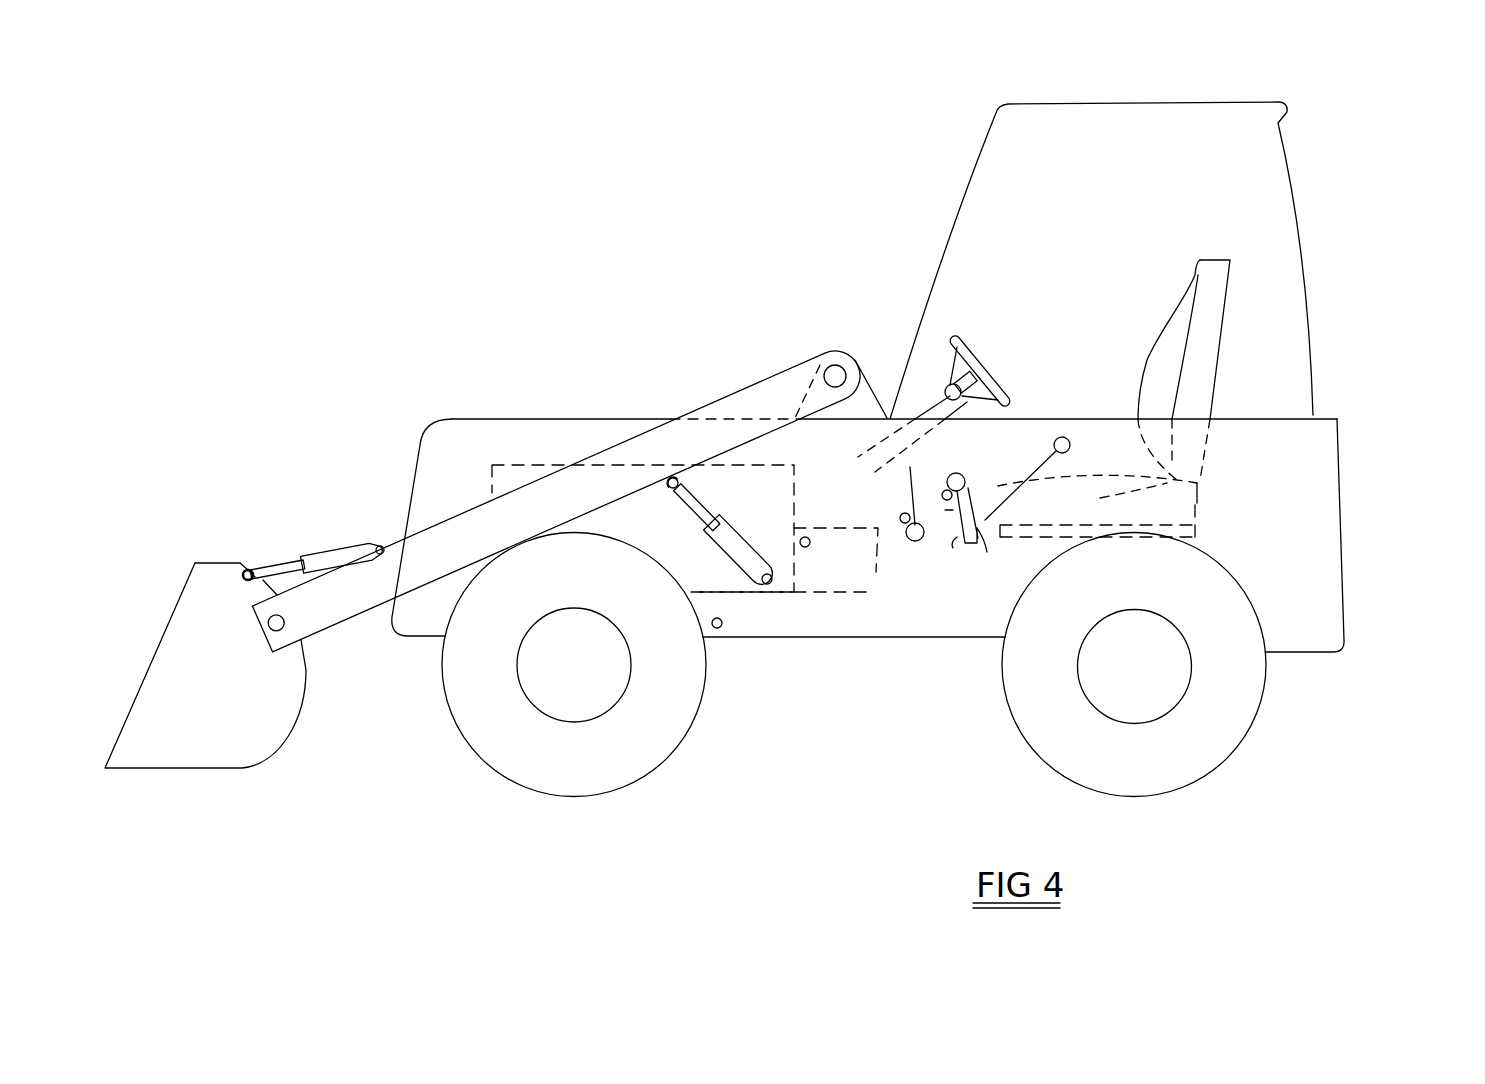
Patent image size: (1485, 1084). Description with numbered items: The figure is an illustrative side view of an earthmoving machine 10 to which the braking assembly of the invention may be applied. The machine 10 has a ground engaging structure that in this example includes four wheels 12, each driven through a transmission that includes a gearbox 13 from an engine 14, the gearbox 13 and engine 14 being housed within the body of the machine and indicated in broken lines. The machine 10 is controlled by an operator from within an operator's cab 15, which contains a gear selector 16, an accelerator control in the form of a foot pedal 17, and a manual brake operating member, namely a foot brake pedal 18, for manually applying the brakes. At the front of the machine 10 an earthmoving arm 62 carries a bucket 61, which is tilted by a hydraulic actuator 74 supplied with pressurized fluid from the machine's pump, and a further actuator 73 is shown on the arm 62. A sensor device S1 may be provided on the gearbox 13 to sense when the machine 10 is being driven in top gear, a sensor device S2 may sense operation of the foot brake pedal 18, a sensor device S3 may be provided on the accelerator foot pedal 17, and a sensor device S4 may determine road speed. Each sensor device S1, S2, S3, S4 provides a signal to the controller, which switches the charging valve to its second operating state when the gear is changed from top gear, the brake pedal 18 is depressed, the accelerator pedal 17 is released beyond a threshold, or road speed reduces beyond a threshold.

The earthmoving machine 10 is at (1330, 241).
The wheels 12 is at (512, 768).
The gearbox 13 is at (837, 595).
The engine 14 is at (748, 595).
The operator's cab 15 is at (1292, 180).
The gear selector 16 is at (1040, 453).
The foot pedal 17 is at (905, 483).
The foot brake pedal 18 is at (957, 537).
The bucket 61 is at (205, 565).
The earthmoving arm 62 is at (650, 440).
The lift cylinder 73 is at (715, 562).
The actuator 74 is at (320, 552).
The sensor device S1 is at (800, 541).
The sensor device S2 is at (943, 490).
The sensor device S3 is at (902, 523).
The sensor device S4 is at (722, 628).